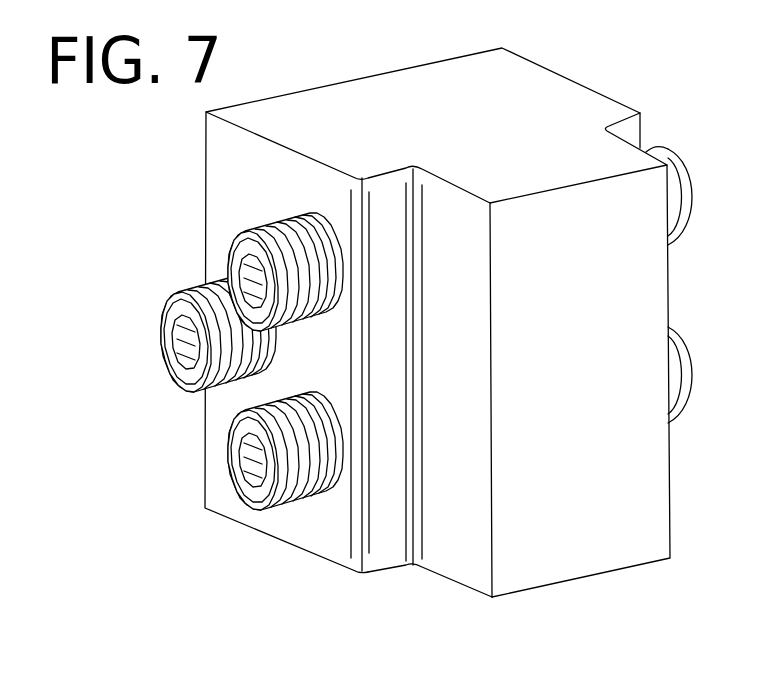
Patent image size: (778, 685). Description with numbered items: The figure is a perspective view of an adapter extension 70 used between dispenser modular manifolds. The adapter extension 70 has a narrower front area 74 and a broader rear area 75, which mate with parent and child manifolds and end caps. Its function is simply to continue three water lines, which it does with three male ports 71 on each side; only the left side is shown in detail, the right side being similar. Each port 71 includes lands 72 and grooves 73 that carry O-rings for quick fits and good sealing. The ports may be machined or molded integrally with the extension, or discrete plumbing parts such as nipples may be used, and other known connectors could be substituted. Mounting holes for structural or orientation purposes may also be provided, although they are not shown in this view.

The adapter extension 70 is at (578, 567).
The male port 71 is at (257, 232).
The land 72 is at (176, 292).
The groove 73 is at (200, 287).
The front area 74 is at (462, 570).
The rear area 75 is at (333, 550).